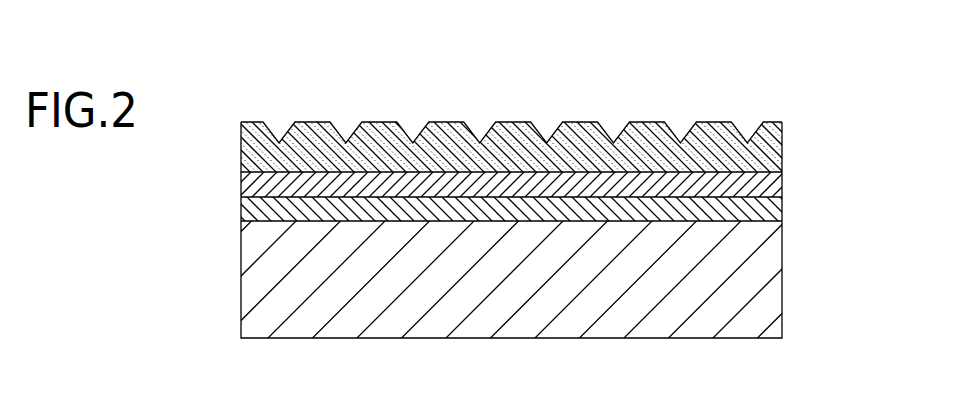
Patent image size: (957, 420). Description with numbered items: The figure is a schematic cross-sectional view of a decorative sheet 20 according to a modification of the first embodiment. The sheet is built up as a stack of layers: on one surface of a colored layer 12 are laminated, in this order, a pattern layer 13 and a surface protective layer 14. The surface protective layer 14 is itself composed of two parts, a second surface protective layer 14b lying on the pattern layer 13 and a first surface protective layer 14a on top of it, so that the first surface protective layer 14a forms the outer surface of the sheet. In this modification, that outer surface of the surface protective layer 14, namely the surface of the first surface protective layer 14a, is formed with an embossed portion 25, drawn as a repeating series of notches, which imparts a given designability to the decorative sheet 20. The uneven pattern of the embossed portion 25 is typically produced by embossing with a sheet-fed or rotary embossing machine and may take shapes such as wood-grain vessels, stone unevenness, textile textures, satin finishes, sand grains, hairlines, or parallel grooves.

The colored layer 12 is at (773, 272).
The pattern layer 13 is at (776, 209).
The surface protective layer 14 is at (541, 116).
The first surface protective layer 14a is at (518, 106).
The second surface protective layer 14b is at (776, 182).
The decorative sheet 20 is at (514, 186).
The embossed portion 25 is at (613, 118).